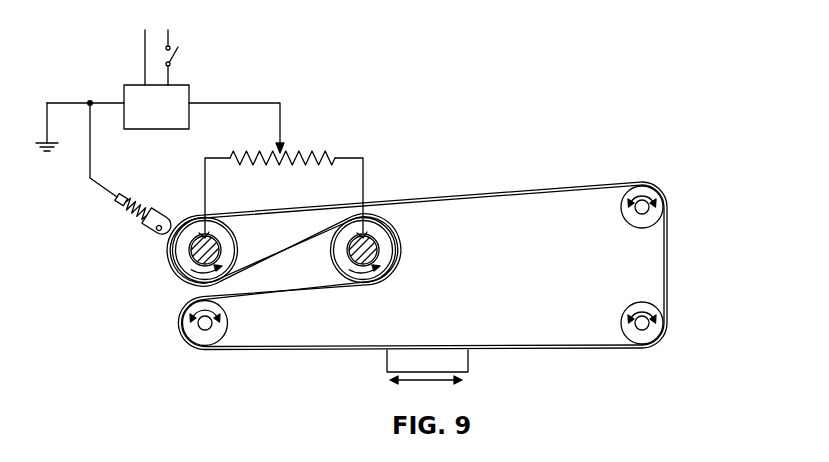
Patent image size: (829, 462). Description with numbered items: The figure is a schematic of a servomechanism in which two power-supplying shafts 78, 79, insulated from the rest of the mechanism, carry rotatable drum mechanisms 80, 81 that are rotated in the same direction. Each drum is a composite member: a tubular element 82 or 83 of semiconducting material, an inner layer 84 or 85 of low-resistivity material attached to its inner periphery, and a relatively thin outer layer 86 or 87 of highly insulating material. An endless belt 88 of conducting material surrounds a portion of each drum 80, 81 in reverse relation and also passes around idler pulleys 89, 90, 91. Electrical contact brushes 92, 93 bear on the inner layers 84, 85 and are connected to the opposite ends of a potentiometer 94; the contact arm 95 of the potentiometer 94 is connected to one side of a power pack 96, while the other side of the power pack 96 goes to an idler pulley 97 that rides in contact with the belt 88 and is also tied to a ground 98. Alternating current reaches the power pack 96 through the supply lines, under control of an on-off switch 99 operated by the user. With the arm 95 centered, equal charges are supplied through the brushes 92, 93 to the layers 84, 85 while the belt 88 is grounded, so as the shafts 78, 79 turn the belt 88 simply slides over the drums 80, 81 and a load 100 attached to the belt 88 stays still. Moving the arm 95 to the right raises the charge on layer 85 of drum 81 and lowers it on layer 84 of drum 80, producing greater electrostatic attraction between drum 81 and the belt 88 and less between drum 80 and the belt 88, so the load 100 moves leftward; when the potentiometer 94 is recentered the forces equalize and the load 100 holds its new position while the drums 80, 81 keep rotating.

The power-supplying shaft 78 is at (219, 254).
The power-supplying shaft 79 is at (370, 253).
The rotatable drum mechanism 80 is at (176, 289).
The rotatable drum mechanism 81 is at (410, 281).
The tubular element 82 is at (180, 267).
The tubular element 83 is at (339, 257).
The layer 84 is at (216, 240).
The layer 85 is at (375, 241).
The layer 86 is at (222, 218).
The layer 87 is at (343, 285).
The endless belt 88 is at (506, 193).
The idler pulley 89 is at (222, 322).
The idler pulley 90 is at (660, 329).
The idler pulley 91 is at (660, 212).
The electrical contact brush 92 is at (199, 232).
The electrical contact brush 93 is at (352, 235).
The potentiometer 94 is at (312, 156).
The contact arm 95 is at (281, 131).
The power pack 96 is at (118, 68).
The idler pulley 97 is at (166, 241).
The ground 98 is at (48, 142).
The on-off switch 99 is at (176, 53).
The load 100 is at (469, 357).